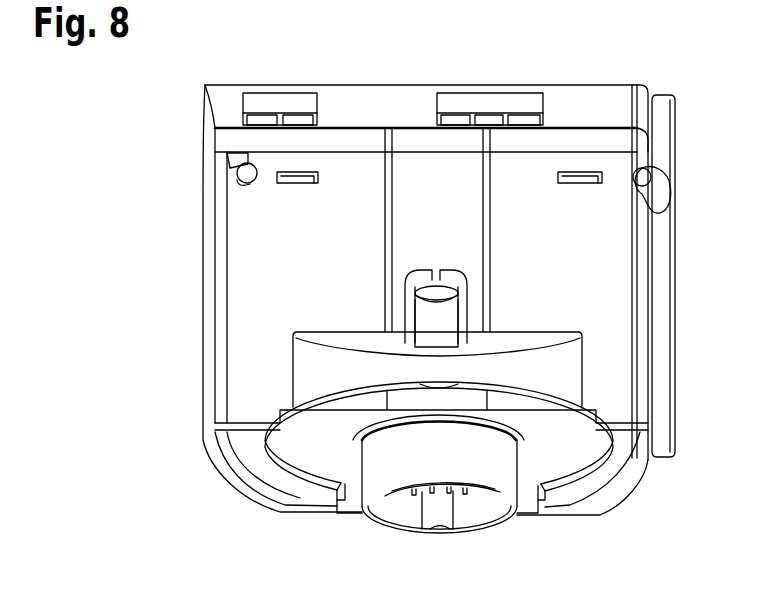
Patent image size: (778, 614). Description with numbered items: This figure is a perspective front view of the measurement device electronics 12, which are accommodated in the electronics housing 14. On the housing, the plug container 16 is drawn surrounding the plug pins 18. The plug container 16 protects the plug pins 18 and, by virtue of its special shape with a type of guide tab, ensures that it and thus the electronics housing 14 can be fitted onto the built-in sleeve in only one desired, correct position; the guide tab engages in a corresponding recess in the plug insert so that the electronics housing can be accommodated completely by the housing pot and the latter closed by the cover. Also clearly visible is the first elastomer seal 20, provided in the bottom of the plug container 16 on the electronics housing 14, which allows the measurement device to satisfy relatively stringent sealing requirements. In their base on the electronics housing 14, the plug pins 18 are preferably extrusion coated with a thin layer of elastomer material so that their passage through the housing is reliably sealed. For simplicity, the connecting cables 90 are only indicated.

The measurement device electronics 12 is at (183, 272).
The electronics housing 14 is at (245, 312).
The plug container 16 is at (380, 470).
The plug pins 18 is at (412, 494).
The first elastomer seal 20 is at (523, 445).
The connecting cables 90 is at (240, 175).